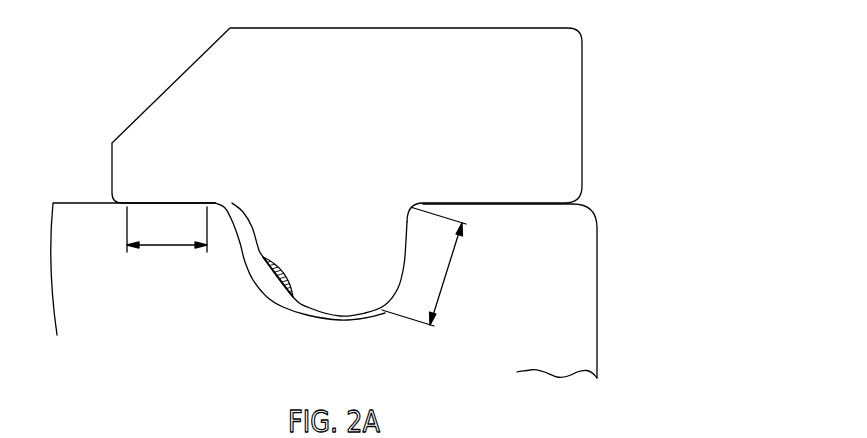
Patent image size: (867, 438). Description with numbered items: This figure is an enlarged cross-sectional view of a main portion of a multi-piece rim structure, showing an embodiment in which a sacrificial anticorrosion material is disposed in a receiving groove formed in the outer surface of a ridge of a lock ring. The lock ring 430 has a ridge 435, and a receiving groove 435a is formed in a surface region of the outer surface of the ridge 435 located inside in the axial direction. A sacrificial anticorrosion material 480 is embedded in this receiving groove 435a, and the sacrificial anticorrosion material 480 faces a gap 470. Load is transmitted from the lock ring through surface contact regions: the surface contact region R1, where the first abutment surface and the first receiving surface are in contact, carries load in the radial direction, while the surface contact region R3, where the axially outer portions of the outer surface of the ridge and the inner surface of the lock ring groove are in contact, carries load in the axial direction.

The lock ring 430 is at (583, 78).
The ridge 435 is at (358, 297).
The receiving groove 435a is at (281, 277).
The gap 470 is at (247, 232).
The sacrificial anticorrosion material 480 is at (281, 277).
The surface contact region R1 is at (167, 229).
The surface contact region R3 is at (424, 267).